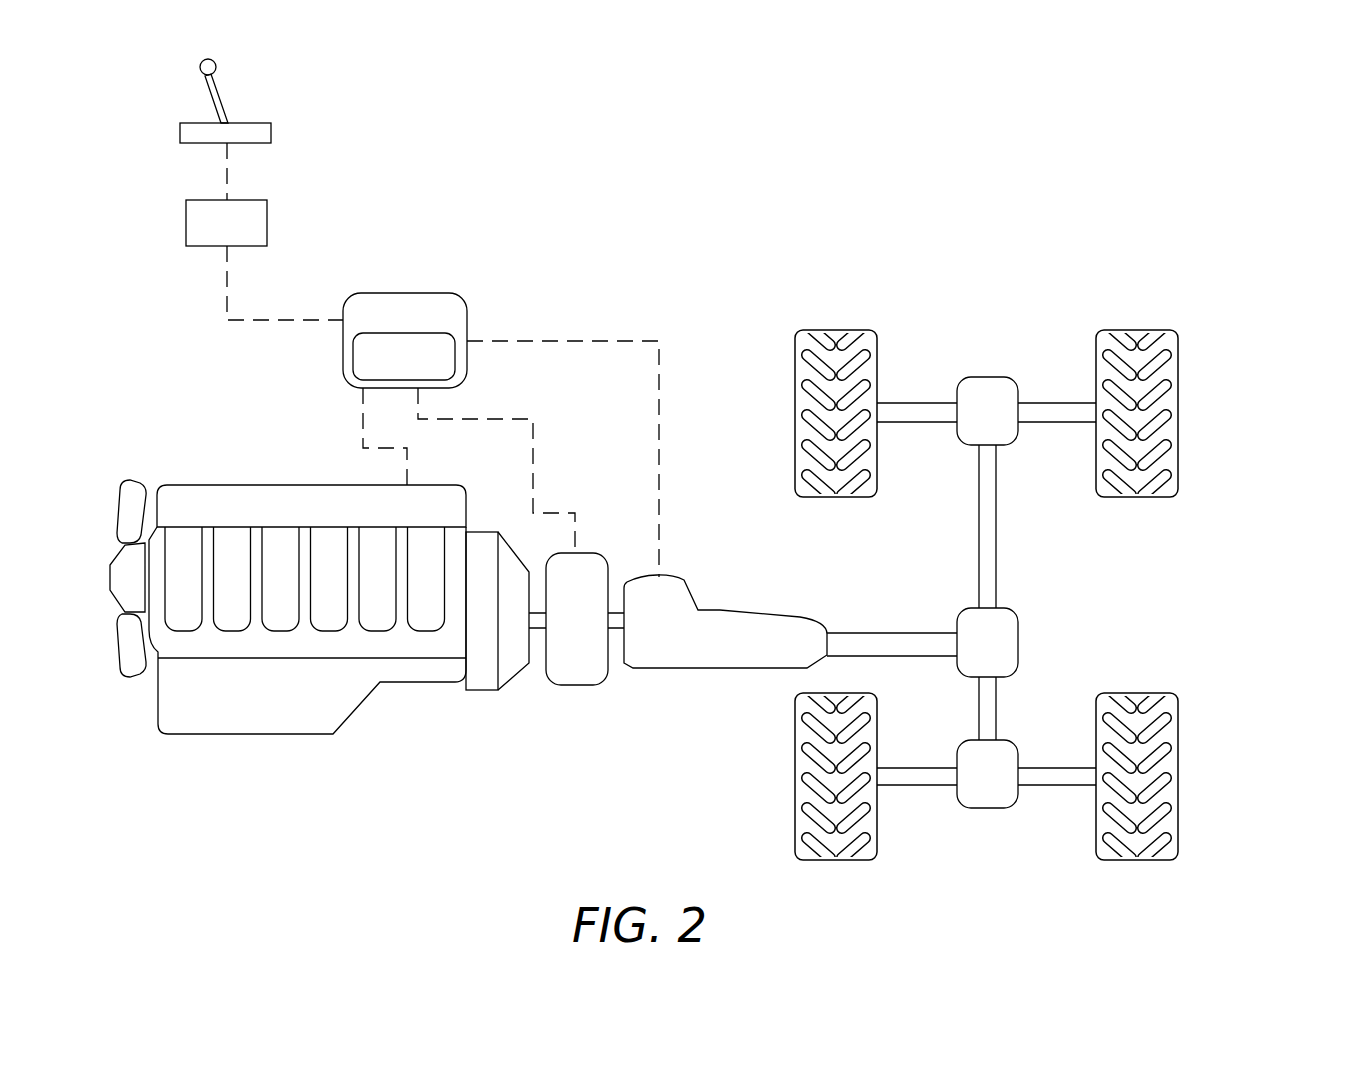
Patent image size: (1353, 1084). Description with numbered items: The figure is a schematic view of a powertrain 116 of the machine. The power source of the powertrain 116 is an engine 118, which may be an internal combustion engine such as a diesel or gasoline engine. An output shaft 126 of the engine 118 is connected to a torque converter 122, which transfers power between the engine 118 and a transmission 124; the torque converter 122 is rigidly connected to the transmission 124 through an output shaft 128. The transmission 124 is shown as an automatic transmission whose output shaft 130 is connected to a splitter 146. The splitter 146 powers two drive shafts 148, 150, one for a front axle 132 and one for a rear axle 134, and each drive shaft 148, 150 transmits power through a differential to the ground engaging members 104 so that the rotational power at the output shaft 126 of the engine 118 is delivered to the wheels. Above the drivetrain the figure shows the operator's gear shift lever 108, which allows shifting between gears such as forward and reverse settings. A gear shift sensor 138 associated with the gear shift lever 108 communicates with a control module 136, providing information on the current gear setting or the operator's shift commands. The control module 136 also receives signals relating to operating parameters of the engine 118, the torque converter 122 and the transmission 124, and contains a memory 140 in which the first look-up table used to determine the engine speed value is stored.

The ground engaging members 104 is at (835, 340).
The gear shift lever 108 is at (216, 65).
The powertrain 116 is at (1228, 185).
The engine 118 is at (253, 717).
The torque converter 122 is at (587, 637).
The transmission 124 is at (722, 622).
The output shaft 126 is at (537, 632).
The output shaft 128 is at (617, 632).
The output shaft 130 is at (878, 637).
The front axle 132 is at (1050, 410).
The rear axle 134 is at (923, 787).
The control module 136 is at (405, 293).
The gear shift sensor 138 is at (241, 233).
The memory 140 is at (419, 369).
The splitter 146 is at (1000, 654).
The drive shaft 148 is at (987, 552).
The drive shaft 150 is at (987, 700).